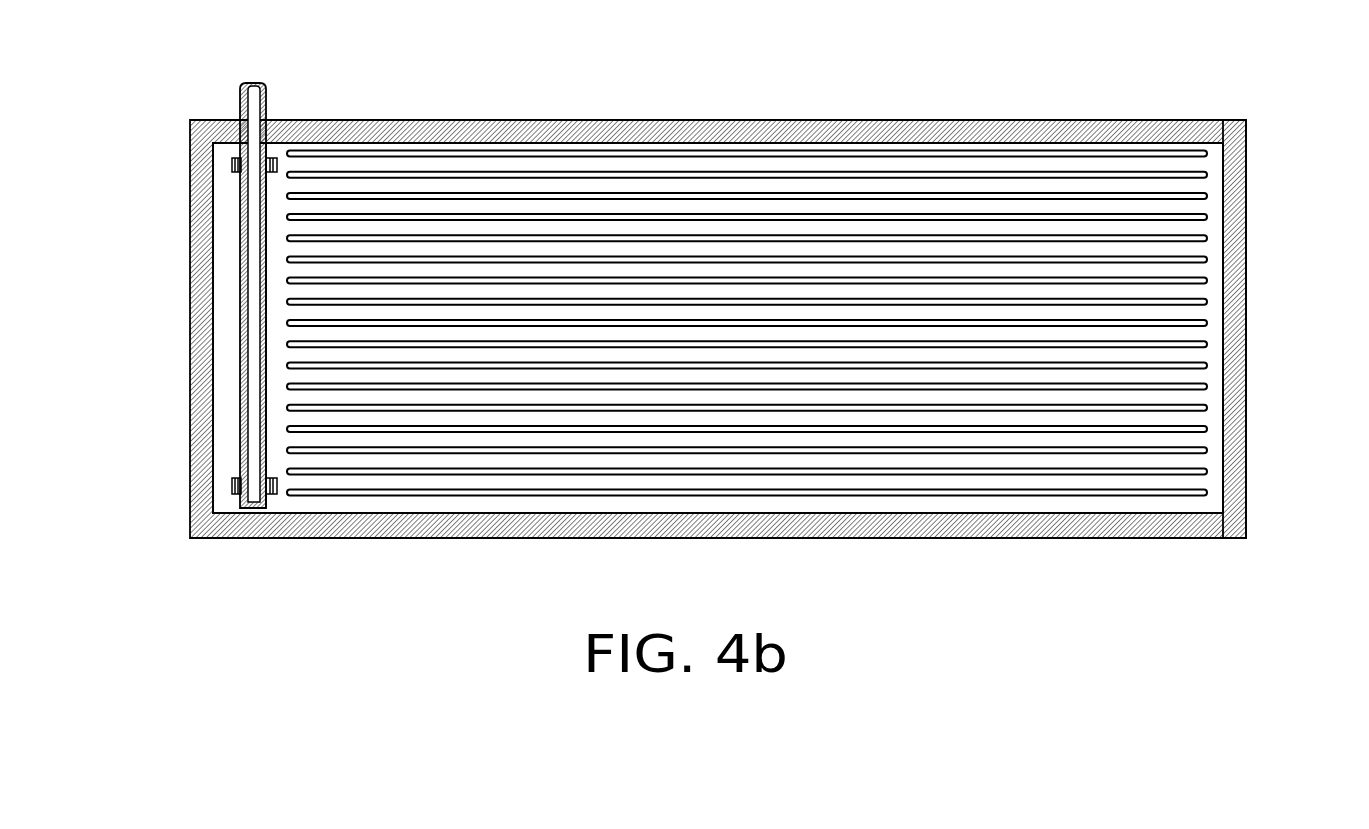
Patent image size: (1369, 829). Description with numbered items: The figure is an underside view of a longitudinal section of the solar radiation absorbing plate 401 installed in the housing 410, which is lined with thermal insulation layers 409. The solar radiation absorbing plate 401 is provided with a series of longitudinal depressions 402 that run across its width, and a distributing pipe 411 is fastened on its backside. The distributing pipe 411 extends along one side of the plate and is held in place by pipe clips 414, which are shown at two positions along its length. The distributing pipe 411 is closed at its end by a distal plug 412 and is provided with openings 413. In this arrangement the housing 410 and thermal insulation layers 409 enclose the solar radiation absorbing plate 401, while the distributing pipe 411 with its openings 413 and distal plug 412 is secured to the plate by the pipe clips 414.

The solar radiation absorbing plate 401 is at (224, 383).
The longitudinal depressions 402 is at (1223, 289).
The thermal insulation layers 409 is at (1158, 124).
The housing 410 is at (1246, 389).
The distributing pipe 411 is at (241, 100).
The distal plug 412 is at (262, 510).
The openings 413 is at (266, 199).
The pipe clips 414 is at (232, 163).